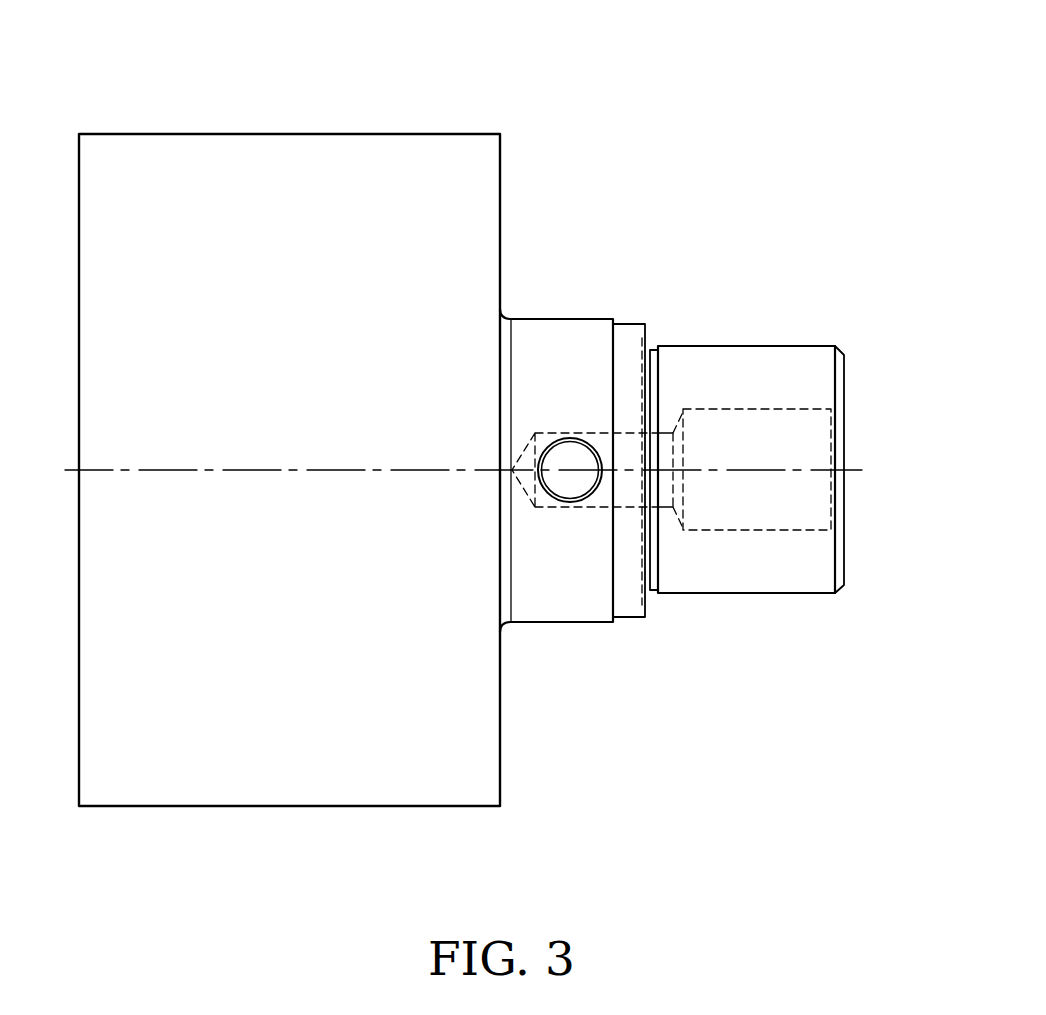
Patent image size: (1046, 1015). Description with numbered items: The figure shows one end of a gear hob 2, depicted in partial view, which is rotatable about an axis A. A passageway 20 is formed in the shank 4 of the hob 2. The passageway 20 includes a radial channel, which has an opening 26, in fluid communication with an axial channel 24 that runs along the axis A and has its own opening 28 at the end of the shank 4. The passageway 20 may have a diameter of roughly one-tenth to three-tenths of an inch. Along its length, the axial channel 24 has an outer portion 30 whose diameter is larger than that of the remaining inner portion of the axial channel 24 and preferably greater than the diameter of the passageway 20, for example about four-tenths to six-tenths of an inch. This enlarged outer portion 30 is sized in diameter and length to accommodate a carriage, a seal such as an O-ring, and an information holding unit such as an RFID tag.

The hob 2 is at (370, 126).
The axis A is at (252, 470).
The shank 4 is at (553, 318).
The passageway 20 is at (587, 432).
The axial channel 24 is at (626, 495).
The opening 26 is at (568, 482).
The opening 28 is at (839, 423).
The outer portion 30 is at (803, 507).